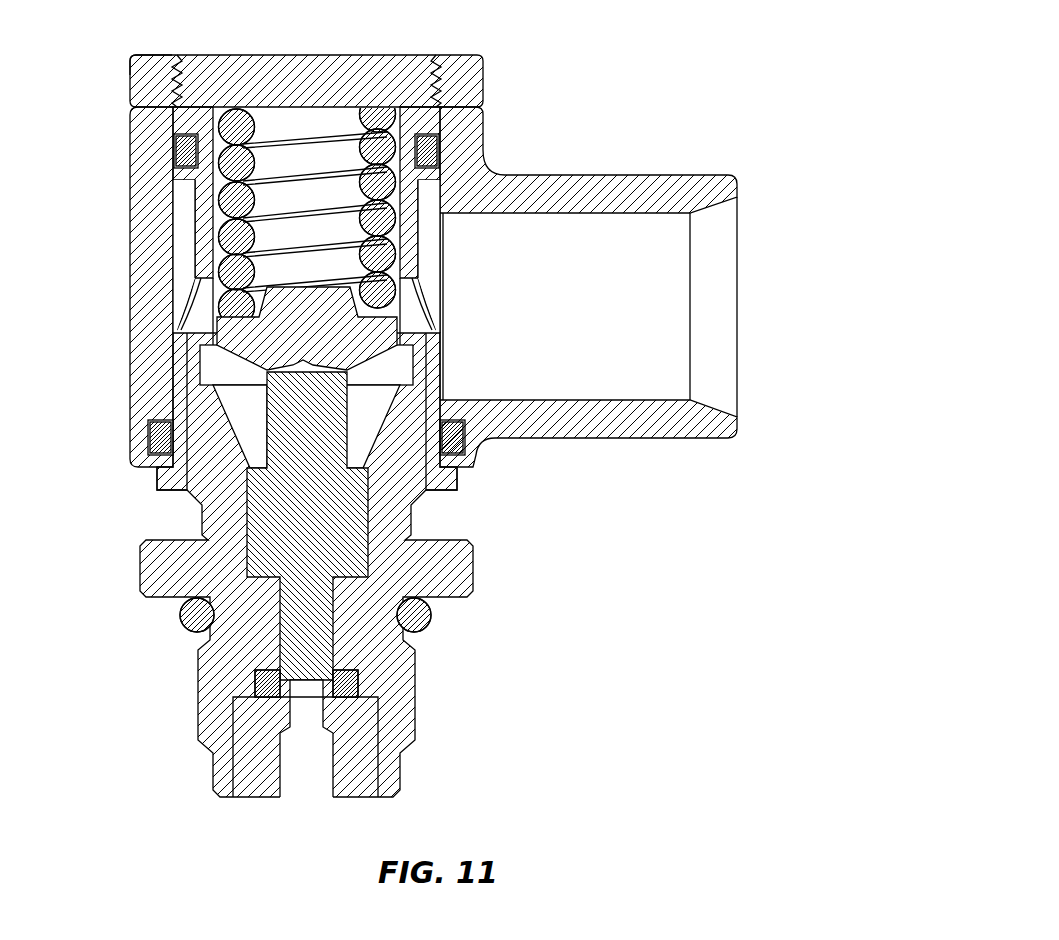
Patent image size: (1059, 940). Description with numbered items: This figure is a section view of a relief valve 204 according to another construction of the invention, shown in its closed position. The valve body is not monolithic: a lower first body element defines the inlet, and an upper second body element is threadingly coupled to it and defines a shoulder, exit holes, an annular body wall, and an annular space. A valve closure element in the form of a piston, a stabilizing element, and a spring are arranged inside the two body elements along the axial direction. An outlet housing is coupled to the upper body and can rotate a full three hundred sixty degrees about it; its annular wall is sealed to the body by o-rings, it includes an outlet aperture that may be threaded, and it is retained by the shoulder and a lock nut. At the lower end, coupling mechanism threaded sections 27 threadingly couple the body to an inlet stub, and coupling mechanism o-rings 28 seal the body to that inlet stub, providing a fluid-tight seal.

The relief valve 204 is at (670, 97).
The coupling mechanism threaded sections 27 is at (198, 720).
The coupling mechanism o-rings 28 is at (183, 620).